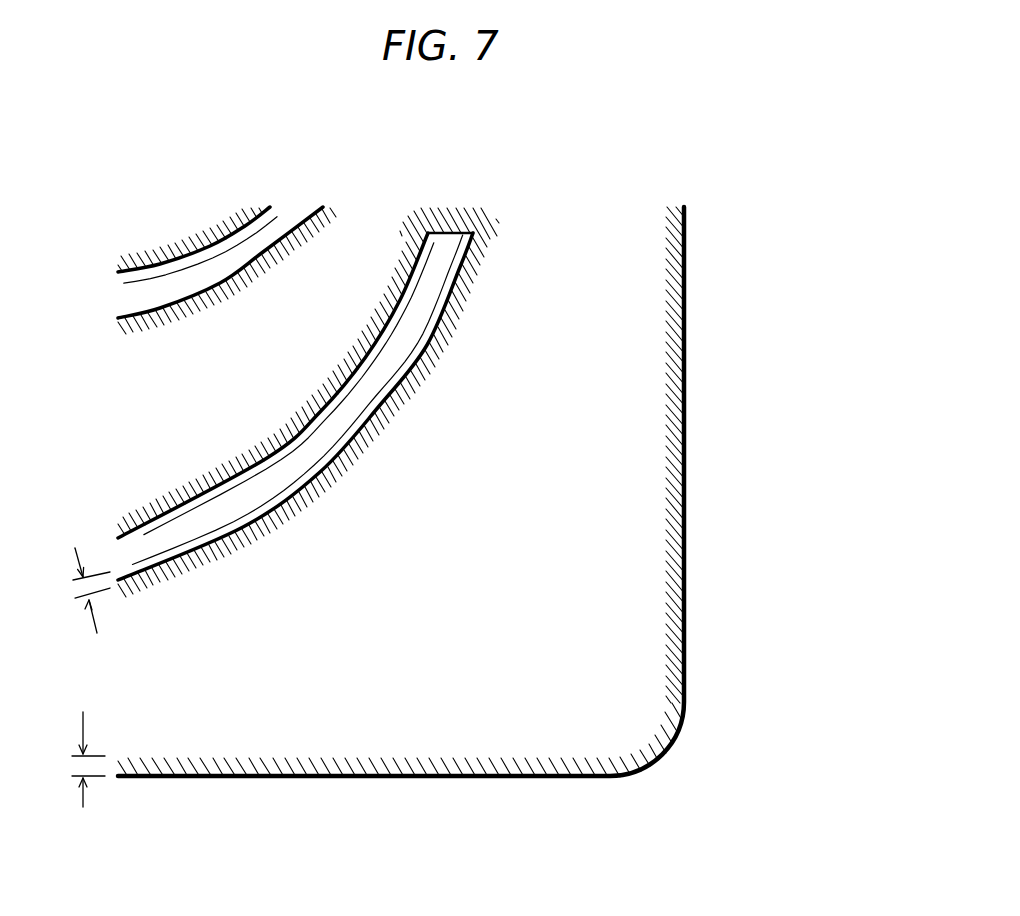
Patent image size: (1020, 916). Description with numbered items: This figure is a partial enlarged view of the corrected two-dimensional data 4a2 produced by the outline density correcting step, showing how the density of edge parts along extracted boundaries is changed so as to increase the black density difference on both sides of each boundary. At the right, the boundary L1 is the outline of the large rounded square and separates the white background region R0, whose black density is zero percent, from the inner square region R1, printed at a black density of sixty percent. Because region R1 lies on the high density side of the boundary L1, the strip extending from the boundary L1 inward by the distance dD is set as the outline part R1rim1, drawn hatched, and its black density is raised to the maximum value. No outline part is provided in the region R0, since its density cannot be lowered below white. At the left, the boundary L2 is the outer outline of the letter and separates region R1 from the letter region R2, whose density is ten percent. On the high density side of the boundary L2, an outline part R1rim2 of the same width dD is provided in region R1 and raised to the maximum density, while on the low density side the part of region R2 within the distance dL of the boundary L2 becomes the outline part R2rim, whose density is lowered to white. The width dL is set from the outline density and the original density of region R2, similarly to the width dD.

The data 4a2 is at (802, 234).
The boundary L1 is at (445, 491).
The boundary L2 is at (295, 393).
The region R0 is at (752, 449).
The region R1 is at (522, 549).
The region R2 is at (152, 309).
The outline part R1rim1 is at (401, 492).
The outline part R1rim2 is at (308, 402).
The outline part R2rim is at (254, 391).
The width dL is at (84, 597).
The width dD is at (74, 759).